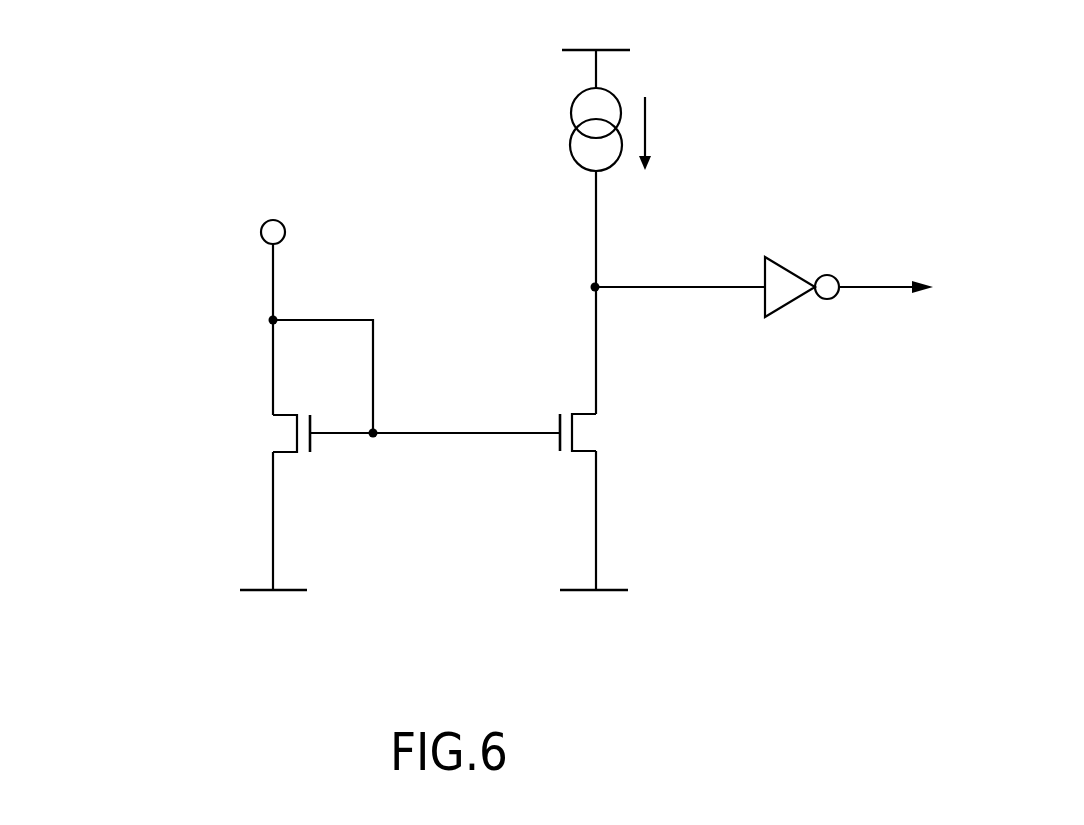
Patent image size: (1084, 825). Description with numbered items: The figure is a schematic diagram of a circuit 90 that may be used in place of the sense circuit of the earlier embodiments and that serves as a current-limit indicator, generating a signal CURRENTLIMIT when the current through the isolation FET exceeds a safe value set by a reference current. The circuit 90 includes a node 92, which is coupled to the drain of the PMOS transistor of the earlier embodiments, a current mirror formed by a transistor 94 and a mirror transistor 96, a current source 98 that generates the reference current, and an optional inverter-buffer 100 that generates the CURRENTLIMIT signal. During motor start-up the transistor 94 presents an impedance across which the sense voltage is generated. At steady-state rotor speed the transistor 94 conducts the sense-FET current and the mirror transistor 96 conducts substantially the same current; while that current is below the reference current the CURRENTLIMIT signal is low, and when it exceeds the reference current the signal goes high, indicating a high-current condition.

The circuit 90 is at (158, 562).
The node 92 is at (281, 223).
The transistor 94 is at (288, 413).
The mirror transistor 96 is at (573, 452).
The current source 98 is at (617, 95).
The inverter-buffer 100 is at (763, 272).